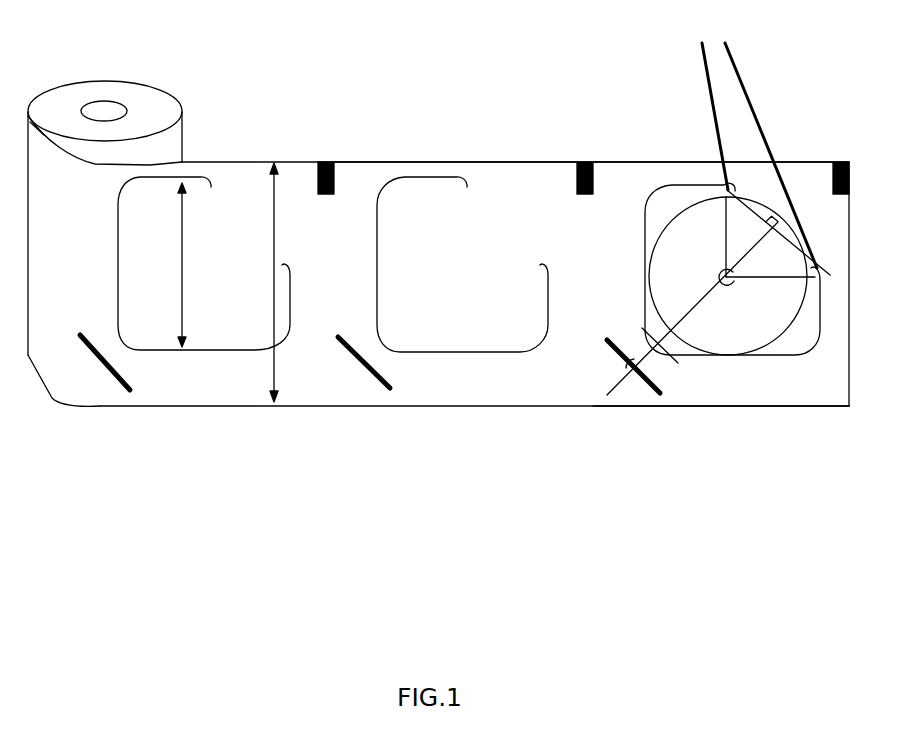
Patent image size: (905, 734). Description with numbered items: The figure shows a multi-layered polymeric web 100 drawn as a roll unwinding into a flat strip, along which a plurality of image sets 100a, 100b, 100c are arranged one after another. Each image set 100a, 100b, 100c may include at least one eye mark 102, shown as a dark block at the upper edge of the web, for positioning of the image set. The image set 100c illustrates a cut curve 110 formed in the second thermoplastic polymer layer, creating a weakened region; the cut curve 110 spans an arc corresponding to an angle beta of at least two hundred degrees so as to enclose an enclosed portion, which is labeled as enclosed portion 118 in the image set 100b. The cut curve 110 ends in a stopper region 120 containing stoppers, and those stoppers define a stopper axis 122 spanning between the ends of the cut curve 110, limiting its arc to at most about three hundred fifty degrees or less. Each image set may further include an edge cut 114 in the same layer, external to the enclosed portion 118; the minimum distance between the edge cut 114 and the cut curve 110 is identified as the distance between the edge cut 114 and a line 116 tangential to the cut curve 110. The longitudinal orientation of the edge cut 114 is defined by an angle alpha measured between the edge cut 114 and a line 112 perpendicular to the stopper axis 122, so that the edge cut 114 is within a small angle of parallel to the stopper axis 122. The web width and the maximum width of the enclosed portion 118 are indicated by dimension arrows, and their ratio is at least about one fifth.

The multi-layered polymeric web 100 is at (380, 466).
The image set 100a is at (197, 416).
The image set 100b is at (455, 416).
The image set 100c is at (732, 418).
The eye mark 102 is at (326, 161).
The cut curve 110 is at (681, 184).
The line perpendicular to stopper axis 112 is at (753, 250).
The edge cut 114 is at (647, 387).
The line tangential to cut curve 116 is at (670, 357).
The enclosed portion 118 is at (460, 262).
The stopper region 120 is at (795, 188).
The stopper axis 122 is at (746, 190).